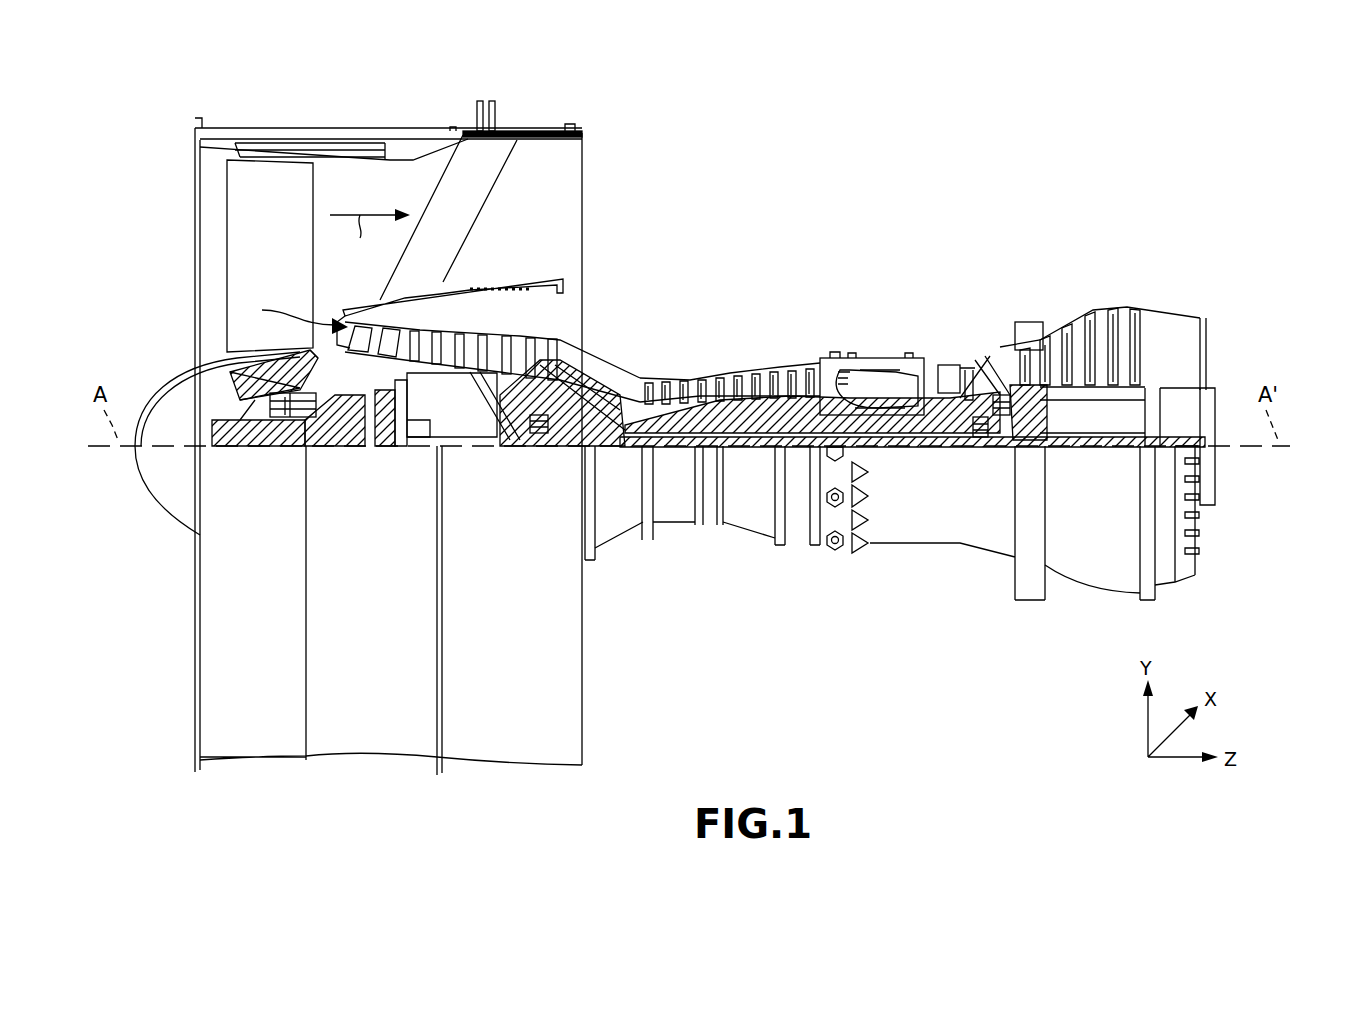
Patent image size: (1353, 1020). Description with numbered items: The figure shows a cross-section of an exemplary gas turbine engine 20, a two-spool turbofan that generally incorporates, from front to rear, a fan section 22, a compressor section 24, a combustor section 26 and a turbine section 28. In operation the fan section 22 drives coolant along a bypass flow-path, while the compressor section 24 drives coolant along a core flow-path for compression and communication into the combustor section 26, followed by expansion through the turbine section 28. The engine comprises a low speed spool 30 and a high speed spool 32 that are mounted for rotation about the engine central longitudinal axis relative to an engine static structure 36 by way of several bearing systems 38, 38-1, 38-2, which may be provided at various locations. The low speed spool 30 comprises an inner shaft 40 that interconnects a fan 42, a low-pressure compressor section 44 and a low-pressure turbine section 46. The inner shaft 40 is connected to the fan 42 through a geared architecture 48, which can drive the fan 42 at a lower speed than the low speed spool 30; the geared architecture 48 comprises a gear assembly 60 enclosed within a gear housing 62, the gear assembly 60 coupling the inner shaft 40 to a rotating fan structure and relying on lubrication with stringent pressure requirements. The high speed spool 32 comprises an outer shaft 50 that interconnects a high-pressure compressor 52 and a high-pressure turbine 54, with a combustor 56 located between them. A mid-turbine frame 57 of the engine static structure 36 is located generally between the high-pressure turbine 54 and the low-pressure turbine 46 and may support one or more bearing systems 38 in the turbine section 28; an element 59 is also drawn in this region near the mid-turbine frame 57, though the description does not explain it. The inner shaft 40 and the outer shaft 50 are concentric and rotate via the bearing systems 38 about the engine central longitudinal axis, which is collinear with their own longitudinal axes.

The gas turbine engine 20 is at (922, 172).
The fan section 22 is at (435, 113).
The compressor section 24 is at (440, 246).
The combustor section 26 is at (928, 246).
The turbine section 28 is at (1148, 246).
The low speed spool 30 is at (757, 458).
The high speed spool 32 is at (795, 410).
The engine static structure 36 is at (368, 738).
The bearing system 38 is at (990, 432).
The bearing system 38-1 is at (283, 416).
The bearing system 38-2 is at (540, 432).
The inner shaft 40 is at (607, 450).
The fan 42 is at (280, 262).
The low-pressure compressor section 44 is at (535, 340).
The low-pressure turbine section 46 is at (1078, 330).
The geared architecture 48 is at (400, 465).
The outer shaft 50 is at (870, 430).
The high-pressure compressor 52 is at (745, 410).
The high-pressure turbine 54 is at (946, 365).
The combustor 56 is at (872, 385).
The mid-turbine frame 57 is at (968, 352).
The airfoils / vanes 59 is at (1010, 345).
The gear assembly 60 is at (410, 422).
The gear housing 62 is at (400, 380).